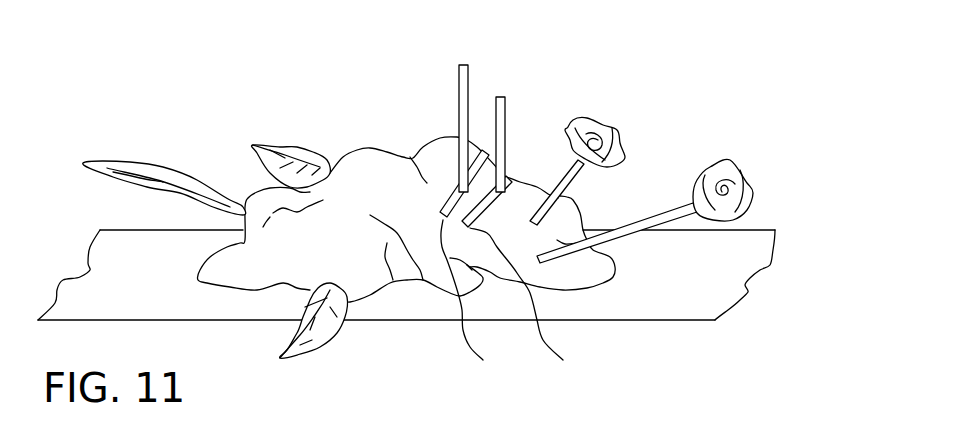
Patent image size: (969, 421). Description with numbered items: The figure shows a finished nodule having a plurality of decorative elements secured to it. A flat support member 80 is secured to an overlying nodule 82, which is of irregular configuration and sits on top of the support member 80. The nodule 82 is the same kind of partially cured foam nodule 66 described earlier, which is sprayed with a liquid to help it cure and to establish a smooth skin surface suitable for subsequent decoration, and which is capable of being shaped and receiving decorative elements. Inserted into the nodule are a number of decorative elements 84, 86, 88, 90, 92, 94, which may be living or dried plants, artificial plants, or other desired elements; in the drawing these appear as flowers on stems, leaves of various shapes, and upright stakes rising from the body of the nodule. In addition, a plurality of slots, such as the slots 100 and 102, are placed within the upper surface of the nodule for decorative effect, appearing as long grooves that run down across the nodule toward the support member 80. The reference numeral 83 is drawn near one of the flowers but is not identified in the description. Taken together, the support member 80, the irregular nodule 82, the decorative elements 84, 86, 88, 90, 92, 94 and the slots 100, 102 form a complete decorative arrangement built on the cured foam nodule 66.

The nodule 66 is at (368, 172).
The support member 80 is at (645, 328).
The nodule 82 is at (419, 124).
The flower 83 is at (560, 197).
The decorative element 84 is at (673, 211).
The decorative element 86 is at (270, 147).
The decorative element 88 is at (150, 162).
The decorative element 90 is at (337, 335).
The decorative element 92 is at (506, 135).
The decorative element 94 is at (468, 93).
The slot 100 is at (491, 296).
The slot 102 is at (545, 305).